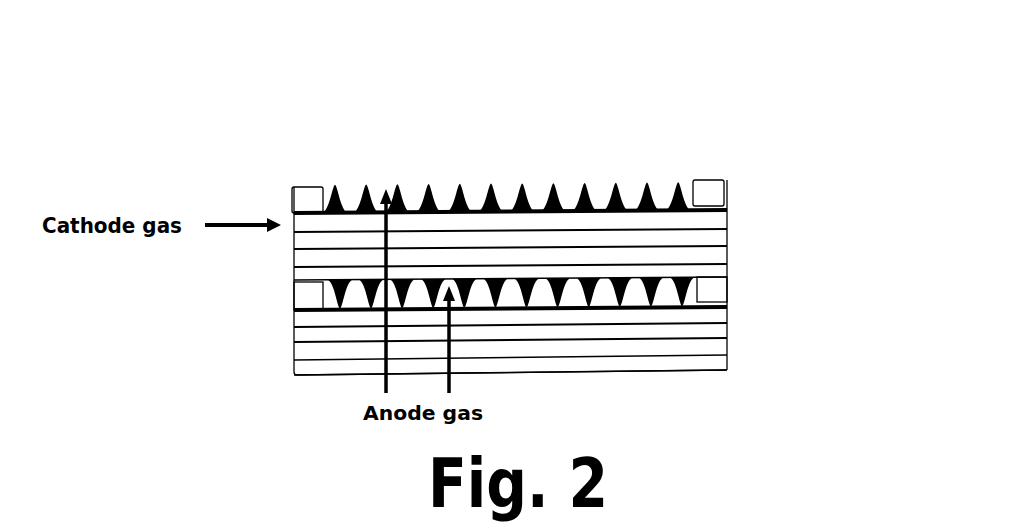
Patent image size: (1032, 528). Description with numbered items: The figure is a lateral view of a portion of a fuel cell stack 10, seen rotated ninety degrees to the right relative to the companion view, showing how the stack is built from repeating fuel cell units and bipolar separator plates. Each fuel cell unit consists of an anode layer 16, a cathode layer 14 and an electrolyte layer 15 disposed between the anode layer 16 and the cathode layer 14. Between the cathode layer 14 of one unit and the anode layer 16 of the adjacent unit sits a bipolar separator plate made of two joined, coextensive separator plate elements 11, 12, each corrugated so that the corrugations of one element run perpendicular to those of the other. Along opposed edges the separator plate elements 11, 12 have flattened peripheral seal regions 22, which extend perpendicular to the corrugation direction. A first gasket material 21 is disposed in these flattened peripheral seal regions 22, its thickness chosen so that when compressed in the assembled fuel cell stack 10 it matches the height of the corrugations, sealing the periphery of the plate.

The fuel cell stack 10 is at (696, 112).
The separator plate element 11 is at (680, 181).
The separator plate element 12 is at (730, 198).
The cathode layer 14 is at (728, 221).
The electrolyte layer 15 is at (722, 233).
The anode layer 16 is at (728, 257).
The first gasket material 21 is at (305, 192).
The flattened peripheral seal region 22 is at (300, 204).